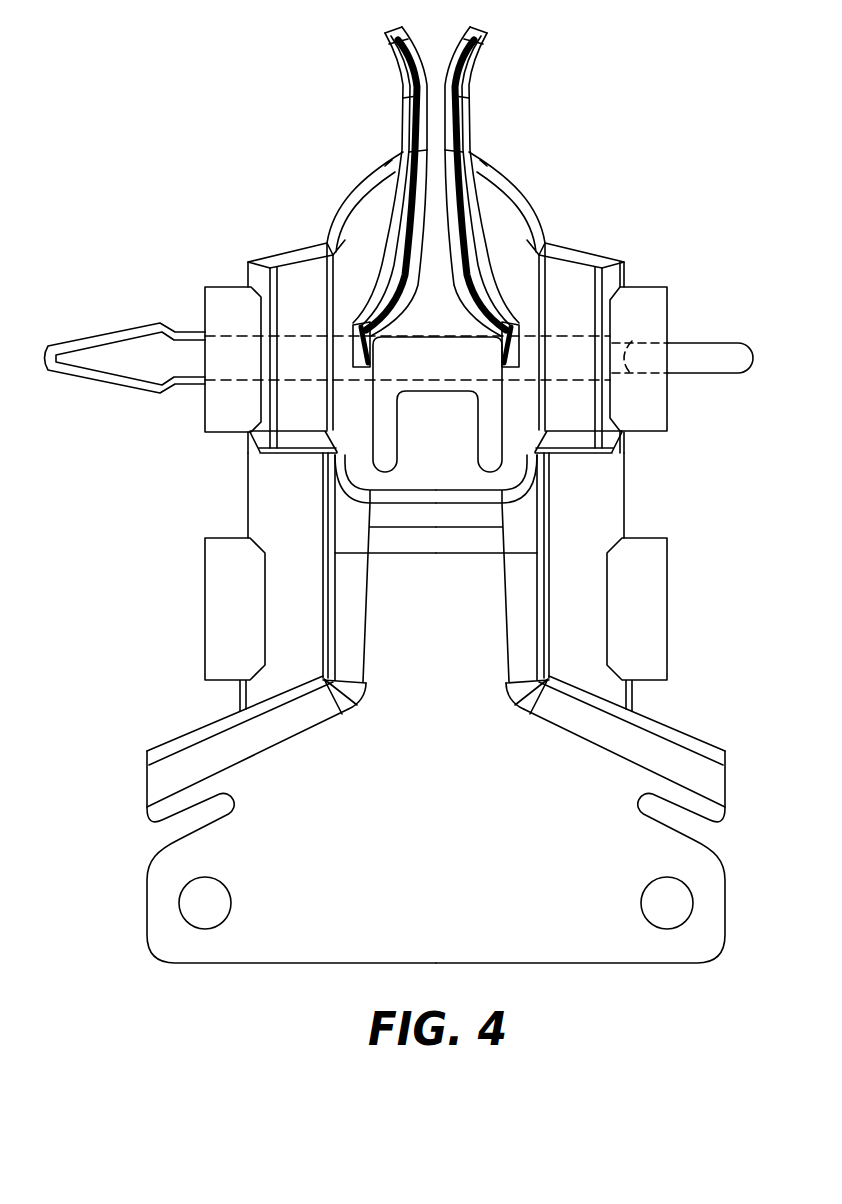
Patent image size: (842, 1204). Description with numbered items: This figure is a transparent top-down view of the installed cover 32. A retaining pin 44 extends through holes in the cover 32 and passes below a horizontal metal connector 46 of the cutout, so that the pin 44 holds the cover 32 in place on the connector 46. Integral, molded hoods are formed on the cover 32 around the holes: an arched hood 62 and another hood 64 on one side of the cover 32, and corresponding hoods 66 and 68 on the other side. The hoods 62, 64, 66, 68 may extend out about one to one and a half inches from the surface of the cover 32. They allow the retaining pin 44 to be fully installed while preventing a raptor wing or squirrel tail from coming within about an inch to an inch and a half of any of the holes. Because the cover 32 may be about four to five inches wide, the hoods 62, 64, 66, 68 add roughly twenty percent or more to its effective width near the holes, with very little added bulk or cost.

The cover 32 is at (620, 262).
The pin 44 is at (712, 360).
The horizontal metal connector 46 is at (408, 353).
The arched hood 62 is at (228, 300).
The hood 64 is at (227, 553).
The hood 66 is at (647, 300).
The hood 68 is at (648, 553).